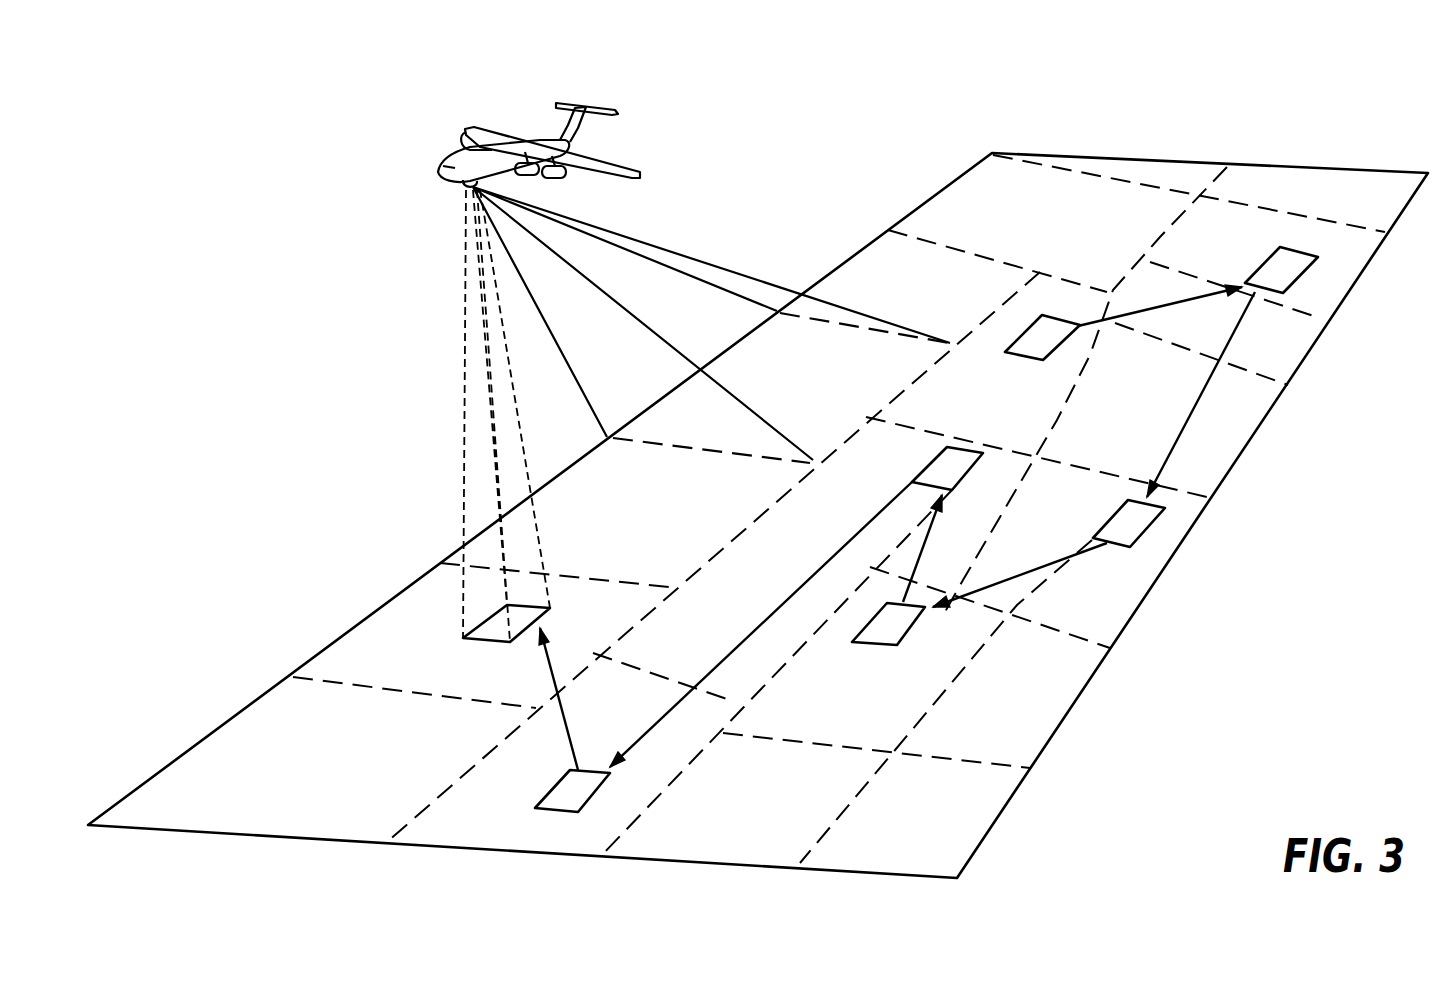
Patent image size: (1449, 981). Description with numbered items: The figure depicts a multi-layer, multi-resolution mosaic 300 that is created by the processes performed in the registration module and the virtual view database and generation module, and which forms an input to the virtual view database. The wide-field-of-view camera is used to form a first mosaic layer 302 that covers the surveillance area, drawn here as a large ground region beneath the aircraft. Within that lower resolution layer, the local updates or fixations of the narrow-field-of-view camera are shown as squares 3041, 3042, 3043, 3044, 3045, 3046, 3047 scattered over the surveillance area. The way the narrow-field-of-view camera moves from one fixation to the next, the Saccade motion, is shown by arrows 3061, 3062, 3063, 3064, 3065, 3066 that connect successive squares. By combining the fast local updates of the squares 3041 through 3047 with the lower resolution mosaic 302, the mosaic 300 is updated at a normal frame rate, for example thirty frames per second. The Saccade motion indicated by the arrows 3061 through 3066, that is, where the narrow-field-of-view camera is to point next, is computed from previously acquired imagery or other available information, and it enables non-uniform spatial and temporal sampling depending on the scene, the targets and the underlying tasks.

The multi-layer, multi-resolution mosaic 300 is at (903, 175).
The first mosaic layer 302 is at (1080, 170).
The square 3041 is at (1053, 317).
The square 3042 is at (1310, 268).
The square 3043 is at (1133, 530).
The square 3044 is at (903, 628).
The square 3045 is at (960, 452).
The square 3046 is at (558, 812).
The square 3047 is at (490, 628).
The arrow 3061 is at (1170, 300).
The arrow 3062 is at (1190, 418).
The arrow 3063 is at (1047, 567).
The arrow 3064 is at (923, 545).
The arrow 3065 is at (753, 633).
The arrow 3066 is at (567, 730).